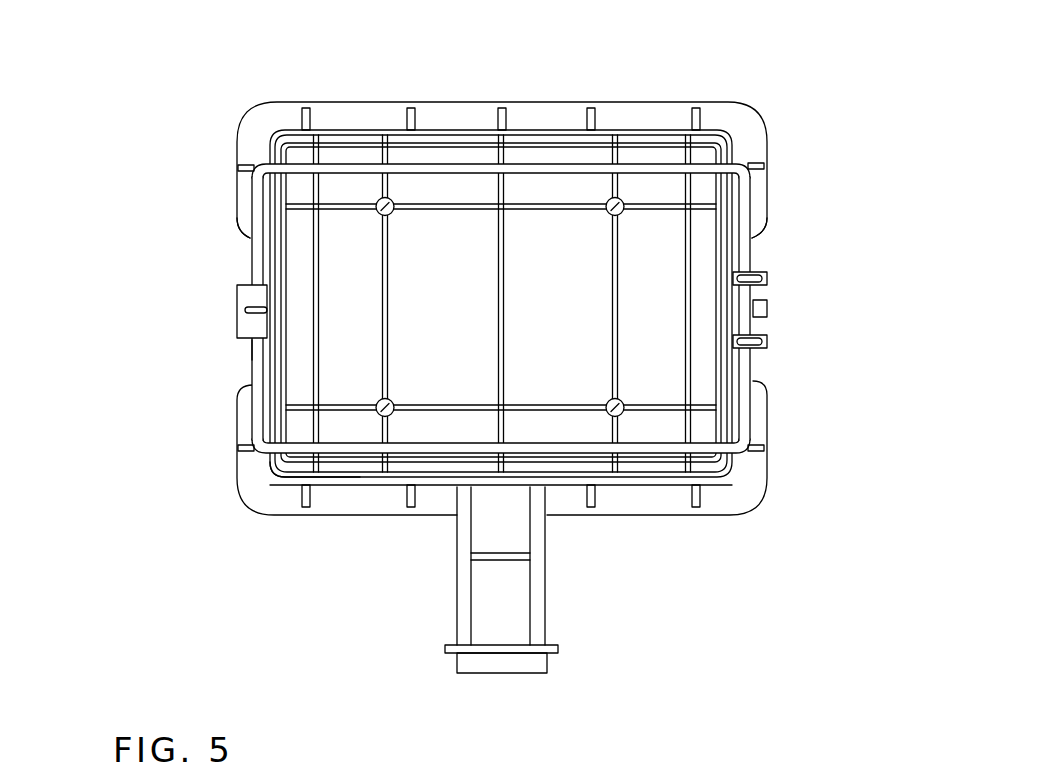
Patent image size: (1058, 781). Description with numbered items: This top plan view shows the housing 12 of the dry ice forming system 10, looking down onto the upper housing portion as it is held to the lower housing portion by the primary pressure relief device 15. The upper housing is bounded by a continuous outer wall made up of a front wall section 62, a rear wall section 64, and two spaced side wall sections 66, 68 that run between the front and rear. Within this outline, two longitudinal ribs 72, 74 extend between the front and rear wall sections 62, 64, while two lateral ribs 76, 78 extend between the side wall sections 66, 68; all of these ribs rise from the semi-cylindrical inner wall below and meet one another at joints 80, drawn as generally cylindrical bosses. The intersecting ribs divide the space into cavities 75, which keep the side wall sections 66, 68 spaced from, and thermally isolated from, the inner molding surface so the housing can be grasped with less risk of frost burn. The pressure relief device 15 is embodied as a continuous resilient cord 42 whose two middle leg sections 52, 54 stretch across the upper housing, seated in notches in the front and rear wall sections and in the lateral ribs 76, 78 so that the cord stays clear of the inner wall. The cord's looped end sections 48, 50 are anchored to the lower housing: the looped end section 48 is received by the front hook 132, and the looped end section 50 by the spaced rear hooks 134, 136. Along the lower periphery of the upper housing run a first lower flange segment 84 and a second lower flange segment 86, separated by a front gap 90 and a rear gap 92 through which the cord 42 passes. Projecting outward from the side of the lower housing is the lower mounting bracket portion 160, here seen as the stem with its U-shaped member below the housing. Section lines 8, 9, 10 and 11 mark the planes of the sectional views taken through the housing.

The section line 8- 8 is at (492, 63).
The section line 9- 9 is at (652, 60).
The dry ice forming system 10 is at (398, 68).
The section line 11- 11 is at (217, 312).
The housing 12 is at (799, 116).
The primary pressure relief device 15 is at (238, 352).
The continuous resilient cord 42 is at (252, 365).
The looped end section 48 is at (250, 238).
The looped end section 50 is at (757, 375).
The middle leg section 52 is at (488, 443).
The middle leg section 54 is at (483, 174).
The front wall section 62 is at (502, 303).
The rear wall section 64 is at (726, 222).
The side wall section 66 is at (347, 470).
The side wall section 68 is at (452, 150).
The longitudinal rib 72 is at (578, 404).
The longitudinal rib 74 is at (540, 210).
The cavities 75 is at (334, 197).
The lateral rib 76 is at (390, 345).
The lateral rib 78 is at (607, 275).
The joints 80 is at (380, 213).
The first lower flange segment 84 is at (748, 485).
The second lower flange segment 86 is at (732, 118).
The front gap 90 is at (236, 262).
The rear gap 92 is at (758, 357).
The front hook 132 is at (247, 322).
The rear hook 134 is at (767, 343).
The rear hook 136 is at (767, 275).
The lower mounting bracket portion 160 is at (535, 580).